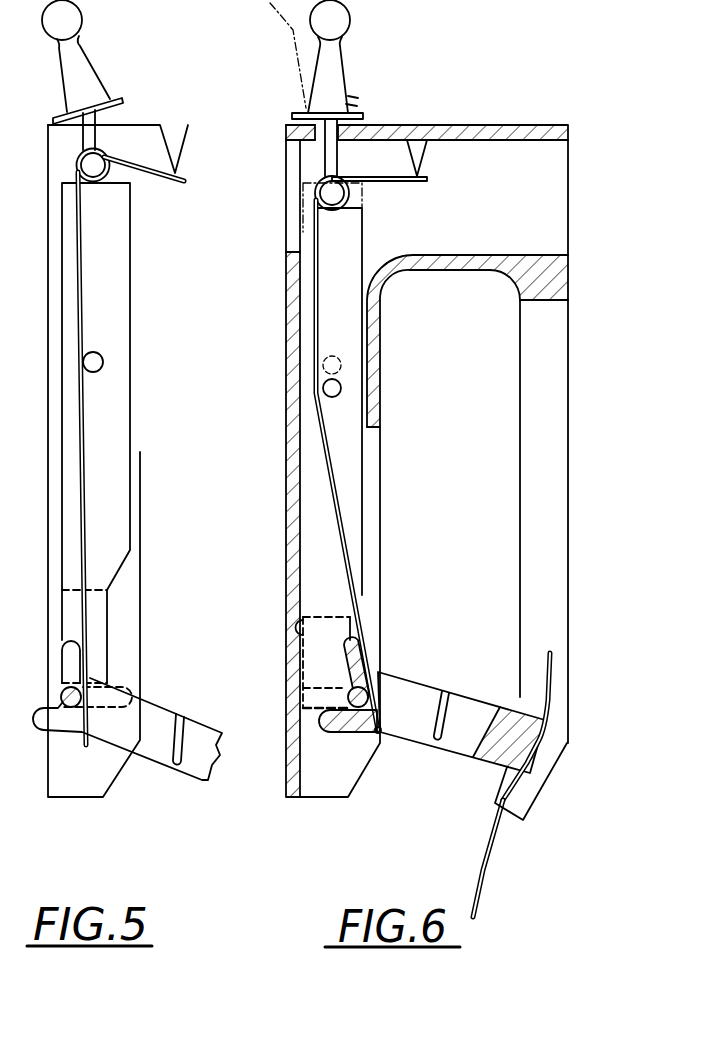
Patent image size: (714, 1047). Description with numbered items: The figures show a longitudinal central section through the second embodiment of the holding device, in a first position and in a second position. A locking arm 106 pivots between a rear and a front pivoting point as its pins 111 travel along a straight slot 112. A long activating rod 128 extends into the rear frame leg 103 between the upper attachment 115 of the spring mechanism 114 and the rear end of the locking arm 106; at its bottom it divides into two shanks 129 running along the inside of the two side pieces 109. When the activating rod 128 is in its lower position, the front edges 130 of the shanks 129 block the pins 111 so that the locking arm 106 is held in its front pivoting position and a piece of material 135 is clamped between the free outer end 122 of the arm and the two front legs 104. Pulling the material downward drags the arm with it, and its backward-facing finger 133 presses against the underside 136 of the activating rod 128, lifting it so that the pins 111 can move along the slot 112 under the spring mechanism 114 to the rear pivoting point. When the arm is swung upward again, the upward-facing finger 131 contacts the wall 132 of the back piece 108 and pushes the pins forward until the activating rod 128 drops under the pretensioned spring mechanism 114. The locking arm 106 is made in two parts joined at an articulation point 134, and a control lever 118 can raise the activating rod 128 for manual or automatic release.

In FIG. 6, the housing wall 103 is at (283, 540).
In FIG. 6, the front legs 104 is at (558, 673).
In FIG. 6, the locking arm 106 is at (475, 710).
In FIG. 6, the back piece 108 is at (320, 718).
In FIG. 6, the side pieces 109 is at (318, 778).
In FIG. 6, the pins 111 is at (372, 760).
In FIG. 5, the slot 112 is at (118, 693).
In FIG. 6, the spring mechanism 114 is at (331, 483).
In FIG. 6, the upper attachment 115 is at (322, 197).
In FIG. 6, the control lever 118 is at (330, 87).
In FIG. 6, the free outer end 122 is at (527, 750).
In FIG. 6, the activating rod 128 is at (312, 427).
In FIG. 6, the shanks 129 is at (312, 678).
In FIG. 6, the front edges 130 is at (380, 662).
In FIG. 6, the upward-facing finger 131 is at (358, 648).
In FIG. 6, the wall 132 is at (300, 622).
In FIG. 6, the backward-facing finger 133 is at (318, 692).
In FIG. 6, the articulation point 134 is at (438, 745).
In FIG. 6, the piece of material 135 is at (483, 863).
In FIG. 6, the underside 136 is at (427, 180).